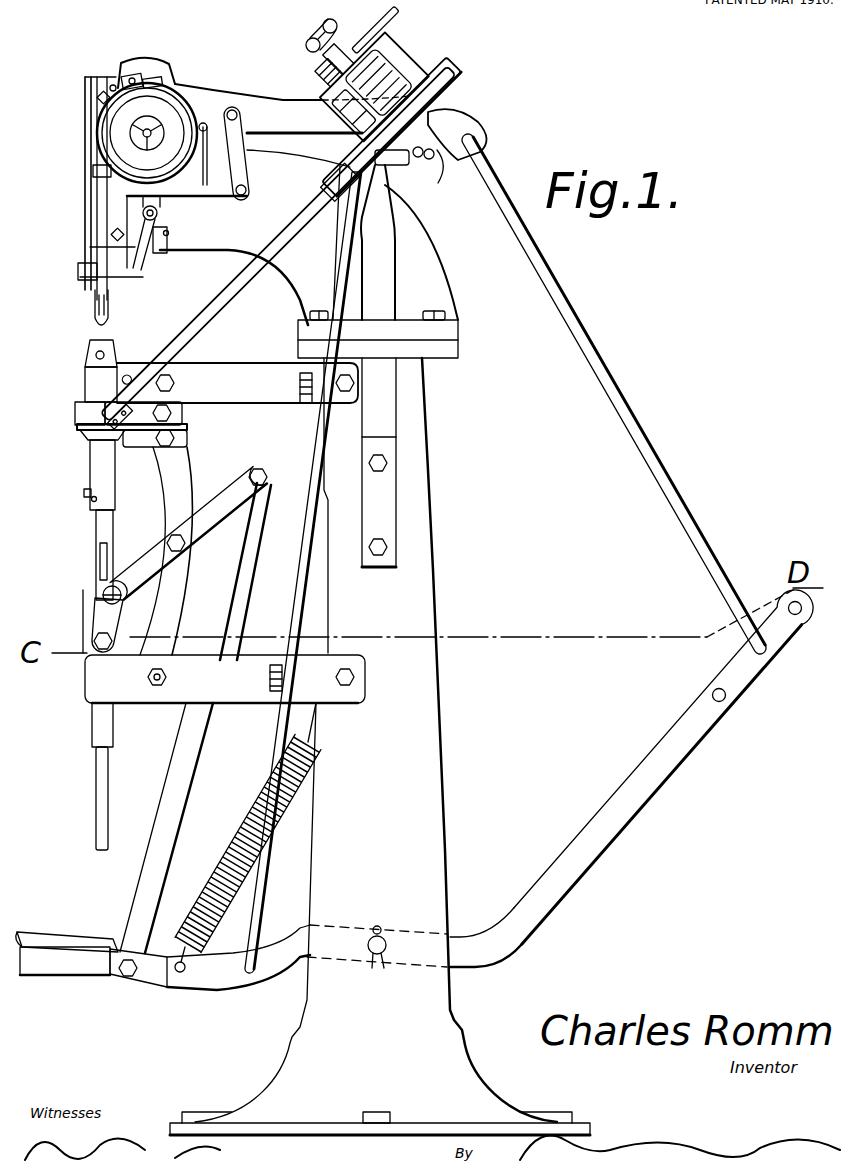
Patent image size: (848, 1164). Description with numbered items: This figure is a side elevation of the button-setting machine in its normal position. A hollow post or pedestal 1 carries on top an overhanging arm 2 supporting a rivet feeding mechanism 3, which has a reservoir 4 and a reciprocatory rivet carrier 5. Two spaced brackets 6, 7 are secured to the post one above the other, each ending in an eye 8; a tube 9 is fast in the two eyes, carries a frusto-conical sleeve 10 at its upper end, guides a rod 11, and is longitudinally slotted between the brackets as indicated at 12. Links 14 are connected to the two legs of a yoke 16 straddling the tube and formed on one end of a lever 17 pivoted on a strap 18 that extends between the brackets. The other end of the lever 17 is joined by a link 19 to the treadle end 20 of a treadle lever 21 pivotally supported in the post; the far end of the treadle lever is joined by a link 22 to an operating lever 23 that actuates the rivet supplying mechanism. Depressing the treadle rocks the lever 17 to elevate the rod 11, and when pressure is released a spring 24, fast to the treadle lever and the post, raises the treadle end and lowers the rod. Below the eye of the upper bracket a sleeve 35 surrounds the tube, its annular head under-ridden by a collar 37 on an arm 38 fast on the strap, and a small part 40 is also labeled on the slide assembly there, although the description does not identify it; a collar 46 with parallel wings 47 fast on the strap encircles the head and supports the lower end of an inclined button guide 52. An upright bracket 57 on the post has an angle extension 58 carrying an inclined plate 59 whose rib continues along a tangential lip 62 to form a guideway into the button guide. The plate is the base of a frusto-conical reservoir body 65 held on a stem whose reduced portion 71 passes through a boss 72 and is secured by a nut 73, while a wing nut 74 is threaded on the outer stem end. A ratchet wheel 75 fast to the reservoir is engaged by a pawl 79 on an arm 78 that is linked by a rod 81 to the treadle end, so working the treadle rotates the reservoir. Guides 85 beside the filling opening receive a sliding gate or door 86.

The post or pedestal 1 is at (433, 747).
The overhanging arm 2 is at (420, 240).
The rivet feeding mechanism 3 is at (97, 170).
The reservoir 4 is at (110, 120).
The reciprocatory rivet carrier 5 is at (90, 310).
The bracket 6 is at (283, 387).
The bracket 7 is at (240, 667).
The eye 8 is at (90, 377).
The tube 9 is at (97, 530).
The frusto-conical sleeve 10 is at (117, 347).
The rod 11 is at (97, 780).
The slot 12 is at (90, 570).
The links 14 is at (136, 672).
The yoke 16 is at (122, 556).
The lever 17 is at (128, 555).
The strap 18 is at (166, 487).
The link 19 is at (175, 760).
The treadle end 20 is at (120, 973).
The treadle lever 21 is at (220, 977).
The link 22 is at (603, 362).
The operating lever 23 is at (240, 100).
The spring 24 is at (233, 837).
The sleeve 35 is at (90, 490).
The collar 37 is at (88, 427).
The arm 38 is at (137, 433).
The pin 40 is at (92, 499).
The collar 46 is at (87, 407).
The parallel wings 47 is at (170, 392).
The inclined button guide 52 is at (229, 300).
The upright bracket 57 is at (380, 395).
The angle extension 58 is at (458, 100).
The plate 59 is at (433, 90).
The tangential lip 62 is at (340, 182).
The reservoir body 65 is at (408, 65).
The reduced portion 71 is at (438, 158).
The boss 72 is at (428, 125).
The nut 73 is at (418, 158).
The wing nut 74 is at (318, 37).
The ratchet wheel 75 is at (327, 67).
The arm 78 is at (380, 38).
The pawl 79 is at (380, 32).
The rod 81 is at (350, 247).
The guides 85 is at (373, 97).
The sliding gate or door 86 is at (370, 133).